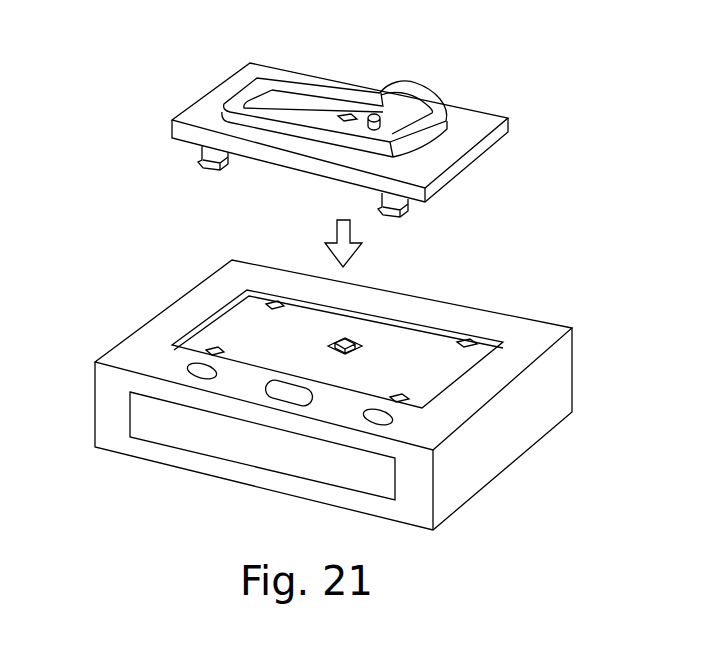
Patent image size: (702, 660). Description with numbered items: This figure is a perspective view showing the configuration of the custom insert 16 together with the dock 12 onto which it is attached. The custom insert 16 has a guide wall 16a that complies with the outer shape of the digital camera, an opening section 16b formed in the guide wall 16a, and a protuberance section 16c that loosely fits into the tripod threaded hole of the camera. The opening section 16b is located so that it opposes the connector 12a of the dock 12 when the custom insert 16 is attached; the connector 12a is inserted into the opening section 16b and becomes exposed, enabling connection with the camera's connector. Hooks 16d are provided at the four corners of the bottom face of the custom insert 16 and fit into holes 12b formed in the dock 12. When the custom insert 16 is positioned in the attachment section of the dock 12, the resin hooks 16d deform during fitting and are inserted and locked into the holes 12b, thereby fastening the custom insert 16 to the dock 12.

The dock 12 is at (503, 445).
The connector 12a is at (338, 338).
The holes 12b is at (273, 299).
The custom insert 16 is at (460, 108).
The guide wall 16a is at (243, 88).
The opening section 16b is at (347, 113).
The protuberance section 16c is at (376, 115).
The hooks 16d is at (225, 167).